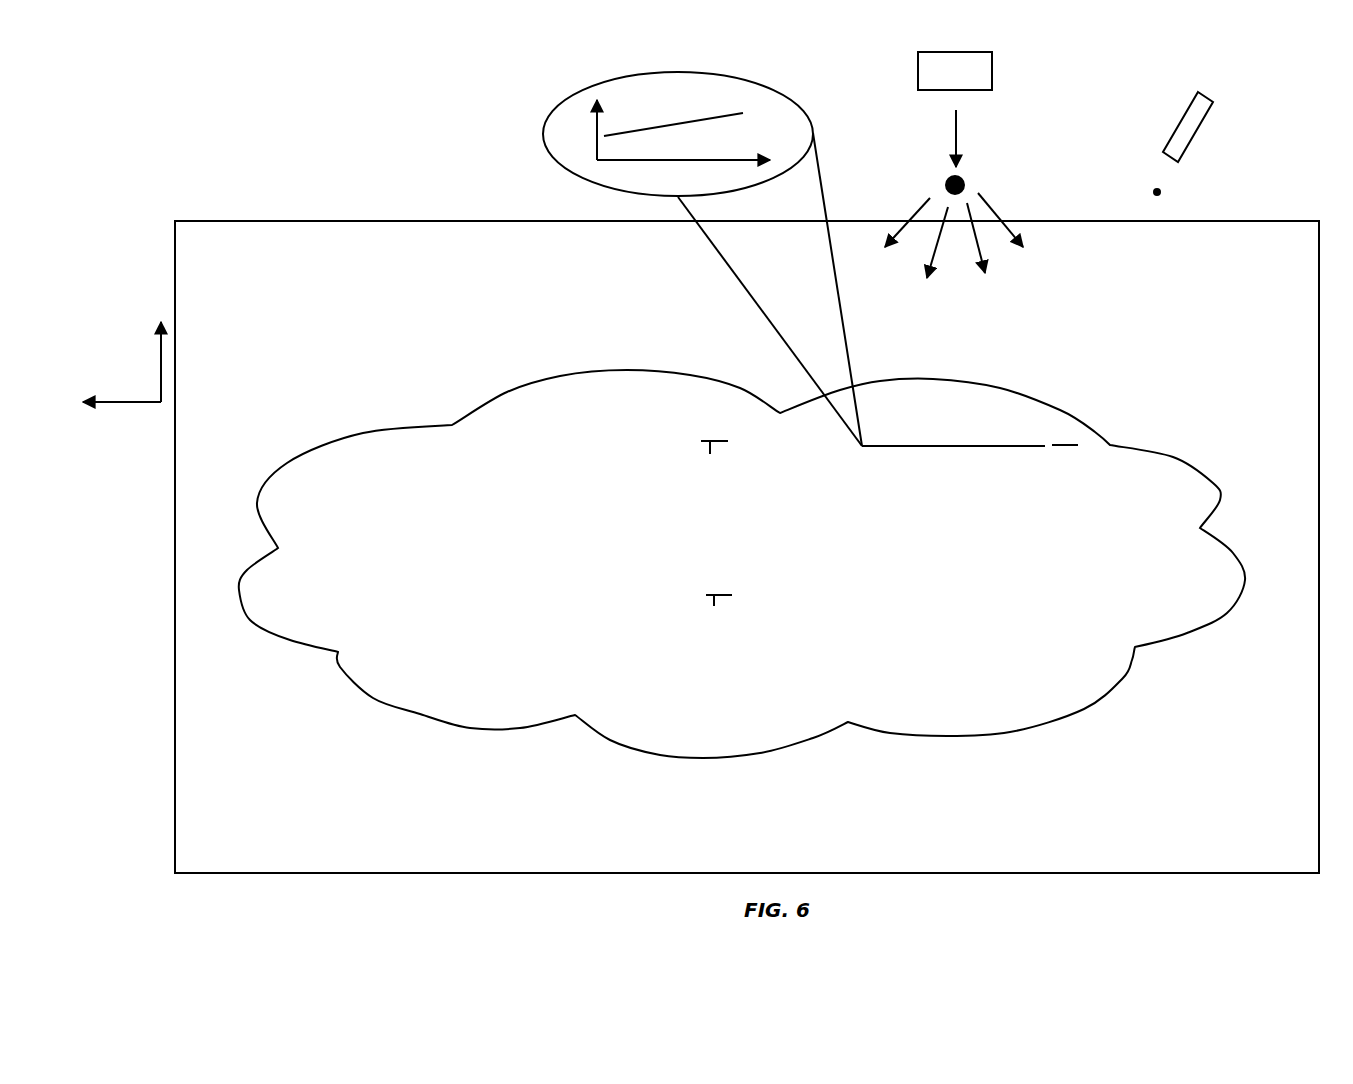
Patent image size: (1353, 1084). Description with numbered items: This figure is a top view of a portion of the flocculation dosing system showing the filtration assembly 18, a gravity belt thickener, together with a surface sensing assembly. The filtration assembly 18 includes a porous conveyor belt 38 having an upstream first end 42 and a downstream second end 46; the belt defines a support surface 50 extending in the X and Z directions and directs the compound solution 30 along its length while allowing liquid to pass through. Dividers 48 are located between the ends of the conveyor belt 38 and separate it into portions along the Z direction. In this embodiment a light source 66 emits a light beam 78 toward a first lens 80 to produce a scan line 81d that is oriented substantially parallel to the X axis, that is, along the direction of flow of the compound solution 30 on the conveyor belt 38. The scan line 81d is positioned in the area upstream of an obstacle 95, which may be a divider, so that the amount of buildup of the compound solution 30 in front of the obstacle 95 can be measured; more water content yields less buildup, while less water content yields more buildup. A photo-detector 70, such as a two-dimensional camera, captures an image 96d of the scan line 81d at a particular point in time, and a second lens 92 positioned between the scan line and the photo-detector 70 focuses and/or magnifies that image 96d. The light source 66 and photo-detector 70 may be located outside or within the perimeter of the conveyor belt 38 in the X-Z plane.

The filtration assembly 18 is at (433, 193).
The compound solution 30 is at (1083, 710).
The conveyor belt 38 is at (303, 873).
The first end 42 is at (248, 193).
The second end 46 is at (1305, 882).
The dividers 48 is at (710, 456).
The support surface 50 is at (532, 792).
The light source 66 is at (992, 75).
The photo-detector 70 is at (1197, 133).
The light beam 78 is at (956, 135).
The first lens 80 is at (945, 185).
The scan line 81d is at (940, 446).
The second lens 92 is at (1157, 192).
The obstacle 95 is at (1063, 458).
The image 96d is at (803, 108).